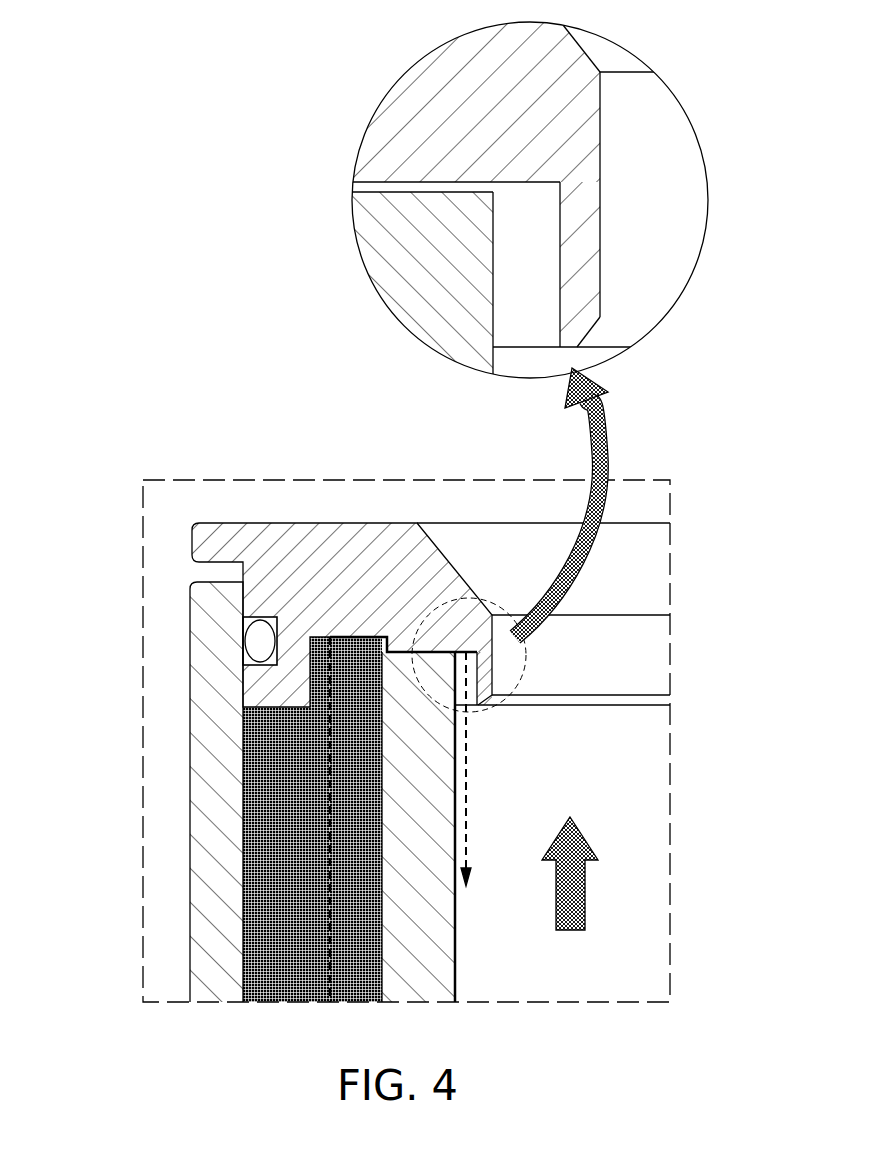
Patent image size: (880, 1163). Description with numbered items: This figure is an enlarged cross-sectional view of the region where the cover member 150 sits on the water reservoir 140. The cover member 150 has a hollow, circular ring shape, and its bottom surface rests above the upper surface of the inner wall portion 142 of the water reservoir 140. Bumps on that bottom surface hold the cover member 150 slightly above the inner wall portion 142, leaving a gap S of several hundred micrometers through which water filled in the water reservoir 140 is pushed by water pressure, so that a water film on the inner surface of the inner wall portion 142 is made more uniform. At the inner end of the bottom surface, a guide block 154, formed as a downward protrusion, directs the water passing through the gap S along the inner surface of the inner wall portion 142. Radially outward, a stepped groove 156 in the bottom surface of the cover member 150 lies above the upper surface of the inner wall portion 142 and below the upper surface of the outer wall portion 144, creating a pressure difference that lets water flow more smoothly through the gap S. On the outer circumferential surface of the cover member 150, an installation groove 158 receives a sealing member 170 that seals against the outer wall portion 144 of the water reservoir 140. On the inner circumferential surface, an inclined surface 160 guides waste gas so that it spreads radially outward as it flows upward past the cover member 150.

The water reservoir 140 is at (254, 597).
The inner wall portion 142 is at (410, 822).
The outer wall portion 144 is at (212, 757).
The cover member 150 is at (360, 548).
The guide block 154 is at (492, 665).
The stepped groove 156 is at (308, 645).
The installation groove 158 is at (246, 652).
The inclined surface 160 is at (410, 645).
The sealing member 170 is at (248, 626).
The gap S is at (309, 160).